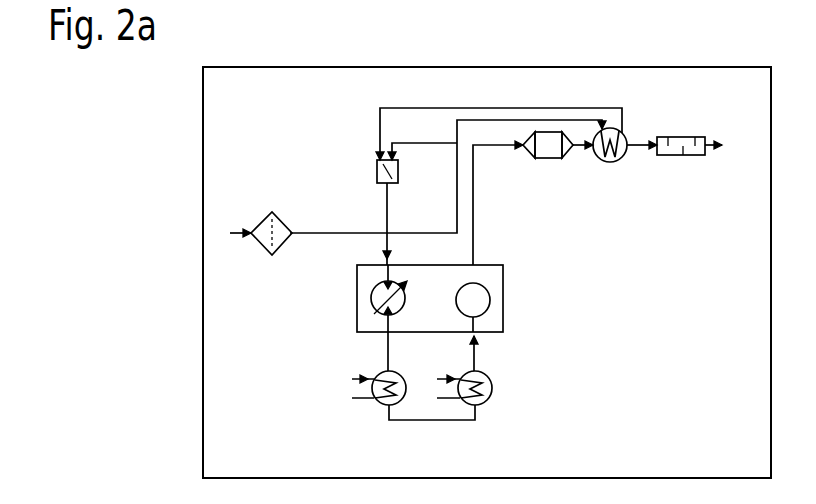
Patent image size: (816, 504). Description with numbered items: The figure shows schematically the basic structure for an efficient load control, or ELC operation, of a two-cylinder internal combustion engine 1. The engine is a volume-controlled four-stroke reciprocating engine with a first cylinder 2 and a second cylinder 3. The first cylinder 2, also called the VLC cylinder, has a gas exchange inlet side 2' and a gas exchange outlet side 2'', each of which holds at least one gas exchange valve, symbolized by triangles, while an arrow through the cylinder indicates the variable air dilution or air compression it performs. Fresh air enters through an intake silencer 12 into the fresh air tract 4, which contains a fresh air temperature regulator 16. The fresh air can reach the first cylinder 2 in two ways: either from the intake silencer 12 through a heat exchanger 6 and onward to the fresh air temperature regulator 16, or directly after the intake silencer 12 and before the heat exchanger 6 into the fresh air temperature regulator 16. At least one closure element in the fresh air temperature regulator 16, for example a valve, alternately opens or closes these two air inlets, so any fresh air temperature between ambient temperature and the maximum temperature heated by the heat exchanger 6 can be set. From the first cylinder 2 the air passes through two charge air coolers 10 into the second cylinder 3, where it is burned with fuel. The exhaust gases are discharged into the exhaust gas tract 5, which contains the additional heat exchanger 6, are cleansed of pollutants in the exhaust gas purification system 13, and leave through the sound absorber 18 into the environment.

The two-cylinder internal combustion engine 1 is at (503, 275).
The first cylinder 2 is at (369, 298).
The gas exchange inlet side 2' is at (355, 274).
The gas exchange outlet side 2'' is at (352, 323).
The second cylinder 3 is at (490, 300).
The fresh air tract 4 is at (401, 222).
The exhaust gas tract 5 is at (477, 234).
The heat exchanger 6 is at (610, 162).
The charge air coolers 10 is at (381, 406).
The intake silencer 12 is at (250, 216).
The exhaust gas purification system 13 is at (548, 158).
The fresh air temperature regulator 16 is at (377, 172).
The sound absorber 18 is at (672, 155).